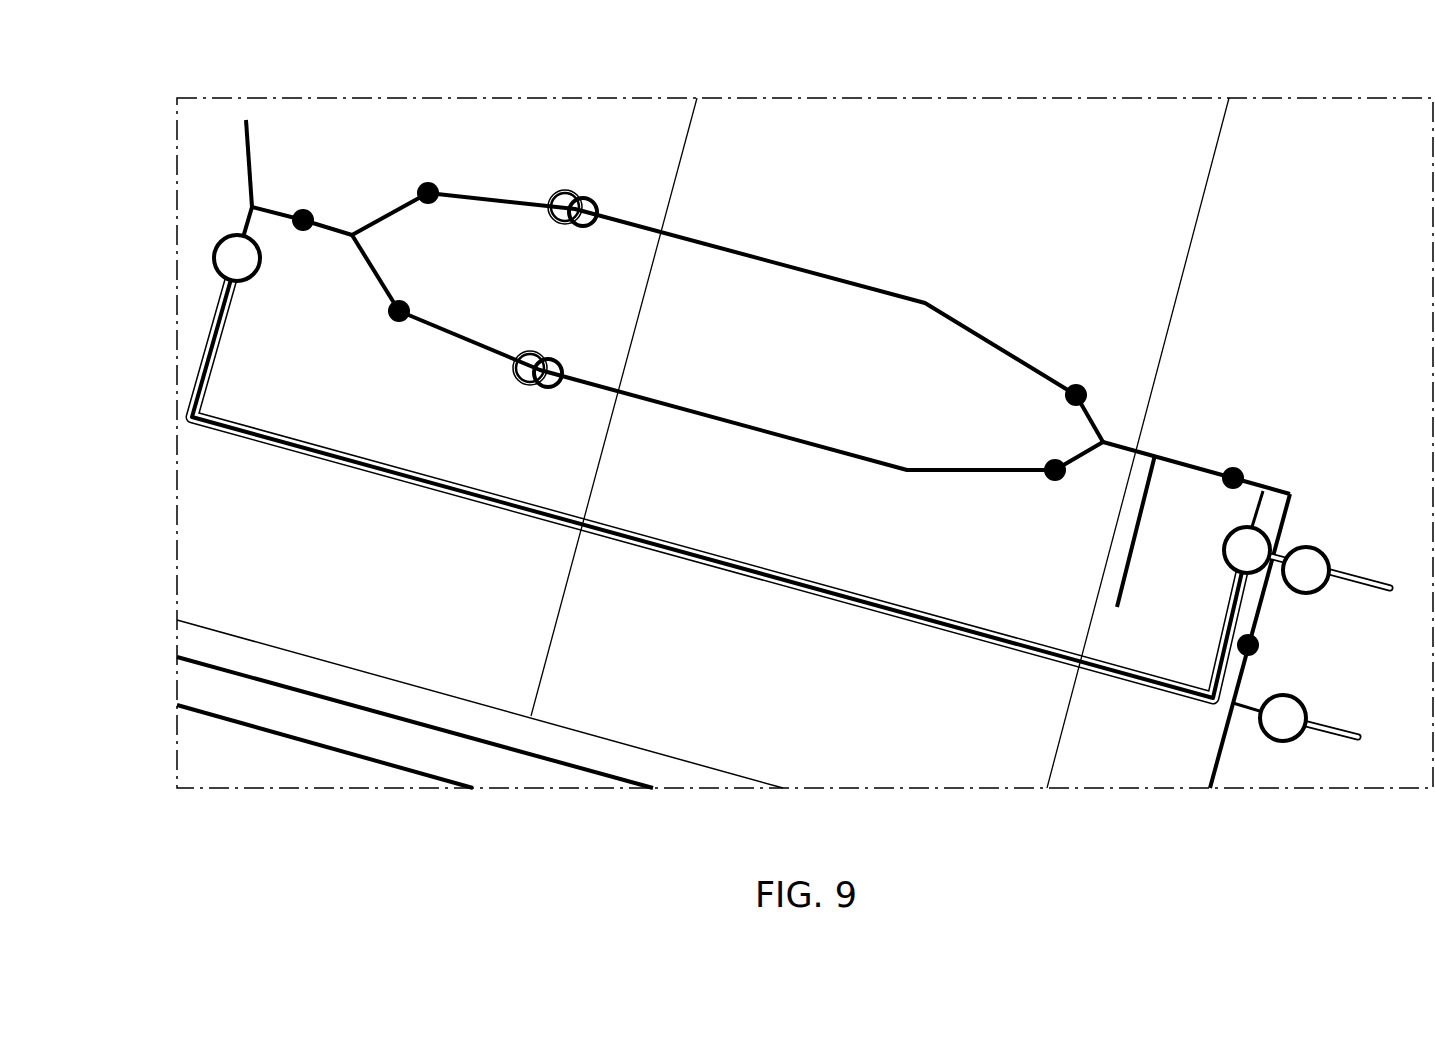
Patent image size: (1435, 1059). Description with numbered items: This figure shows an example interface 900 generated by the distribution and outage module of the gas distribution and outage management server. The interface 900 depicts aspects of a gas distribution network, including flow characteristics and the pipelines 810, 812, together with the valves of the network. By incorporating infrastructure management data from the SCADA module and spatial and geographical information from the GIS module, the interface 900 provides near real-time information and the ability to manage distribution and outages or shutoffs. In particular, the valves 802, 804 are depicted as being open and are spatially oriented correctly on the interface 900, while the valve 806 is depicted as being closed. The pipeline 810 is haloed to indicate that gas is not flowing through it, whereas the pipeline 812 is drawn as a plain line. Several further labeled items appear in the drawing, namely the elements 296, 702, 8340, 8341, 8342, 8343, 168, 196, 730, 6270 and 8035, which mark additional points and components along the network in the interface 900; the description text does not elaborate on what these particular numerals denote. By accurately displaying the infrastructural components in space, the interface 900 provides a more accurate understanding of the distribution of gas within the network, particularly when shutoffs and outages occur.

The interface 900 is at (1305, 52).
The closed valve 806 is at (233, 257).
The open valve 802 is at (430, 186).
The node 296 is at (302, 198).
The node 702 is at (388, 186).
The upper track segment with switch symbols 8340 is at (526, 170).
The lower track segment with switch symbols 8341 is at (727, 352).
The pipeline 812 is at (842, 278).
The open valve 804 is at (392, 320).
The node 8342 is at (1134, 379).
The node 8343 is at (1123, 436).
The node 168 is at (1221, 448).
The junction circle 196 is at (1283, 513).
The junction circle 730 is at (1328, 546).
The node 6270 is at (1300, 641).
The junction circle 8035 is at (1321, 694).
The pipeline 810 is at (682, 553).